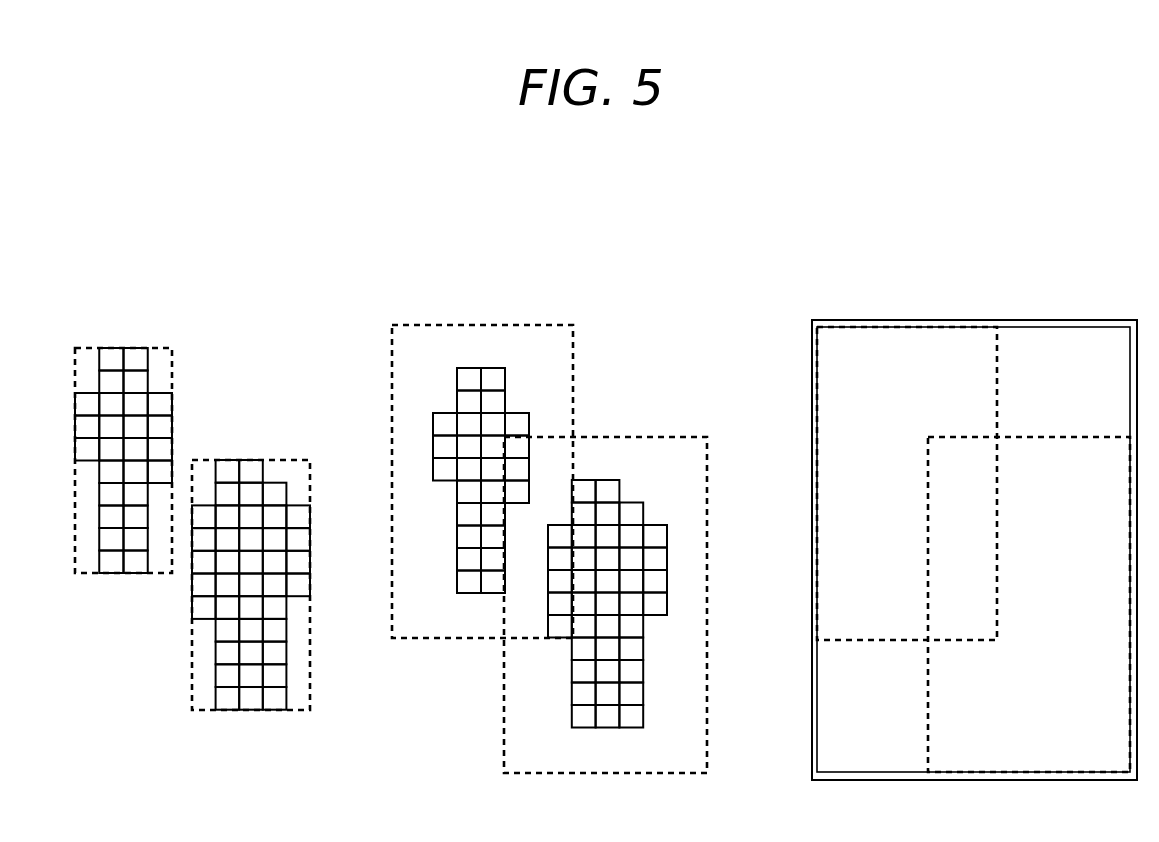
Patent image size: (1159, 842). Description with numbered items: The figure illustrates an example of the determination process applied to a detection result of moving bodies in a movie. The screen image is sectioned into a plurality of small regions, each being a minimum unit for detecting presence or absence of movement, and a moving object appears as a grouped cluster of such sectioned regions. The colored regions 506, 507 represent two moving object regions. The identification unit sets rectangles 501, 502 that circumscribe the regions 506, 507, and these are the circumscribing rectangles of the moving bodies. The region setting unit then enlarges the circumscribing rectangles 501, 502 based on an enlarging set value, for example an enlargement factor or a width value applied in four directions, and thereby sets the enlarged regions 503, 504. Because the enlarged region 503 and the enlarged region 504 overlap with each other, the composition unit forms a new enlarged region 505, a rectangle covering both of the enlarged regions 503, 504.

The circumscribing rectangle 501 is at (123, 457).
The circumscribing rectangle 502 is at (256, 585).
The enlarged region 503 is at (493, 325).
The enlarged region 504 is at (640, 437).
The new enlarged region 505 is at (1032, 320).
The colored region 506 is at (132, 470).
The colored region 507 is at (267, 643).